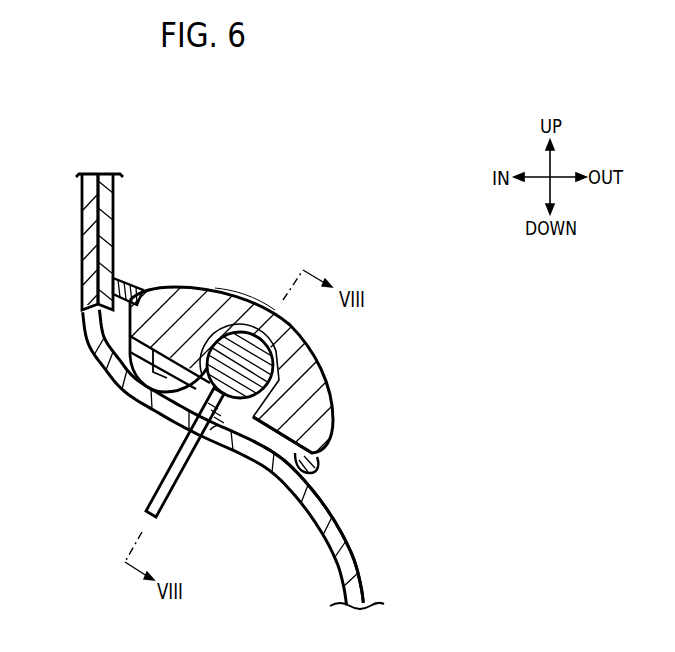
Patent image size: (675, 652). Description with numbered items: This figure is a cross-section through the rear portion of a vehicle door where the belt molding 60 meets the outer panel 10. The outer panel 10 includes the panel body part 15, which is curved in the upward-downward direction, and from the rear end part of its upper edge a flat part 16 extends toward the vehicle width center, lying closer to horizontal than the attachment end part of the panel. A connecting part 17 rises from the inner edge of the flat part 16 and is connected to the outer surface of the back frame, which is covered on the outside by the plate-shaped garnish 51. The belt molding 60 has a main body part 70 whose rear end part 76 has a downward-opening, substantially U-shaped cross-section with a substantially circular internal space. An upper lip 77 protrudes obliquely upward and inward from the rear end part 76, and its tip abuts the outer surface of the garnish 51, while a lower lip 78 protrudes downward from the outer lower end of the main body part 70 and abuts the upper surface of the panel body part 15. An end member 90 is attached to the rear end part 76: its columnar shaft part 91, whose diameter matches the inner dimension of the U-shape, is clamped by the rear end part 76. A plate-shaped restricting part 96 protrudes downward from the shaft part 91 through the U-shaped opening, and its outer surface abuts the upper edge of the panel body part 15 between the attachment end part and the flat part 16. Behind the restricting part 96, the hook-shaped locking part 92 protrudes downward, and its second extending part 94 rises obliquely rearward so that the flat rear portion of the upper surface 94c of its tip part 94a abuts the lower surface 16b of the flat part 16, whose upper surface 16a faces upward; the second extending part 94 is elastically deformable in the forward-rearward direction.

The outer panel 10 is at (357, 553).
The panel body part 15 is at (276, 470).
The flat part 16 is at (123, 390).
The upper surface 16a is at (199, 379).
The lower surface 16b is at (157, 410).
The connecting part 17 is at (82, 210).
The garnish 51 is at (114, 209).
The belt molding 60 is at (395, 276).
The main body part 70 is at (177, 285).
The rear end part 76 is at (232, 295).
The upper lip 77 is at (138, 294).
The lower lip 78 is at (312, 460).
The end member 90 is at (276, 358).
The shaft part 91 is at (278, 340).
The locking part 92 is at (185, 478).
The second extending part 94 is at (167, 513).
The tip part 94a is at (170, 490).
The upper surface 94c is at (215, 437).
The restricting part 96 is at (253, 413).